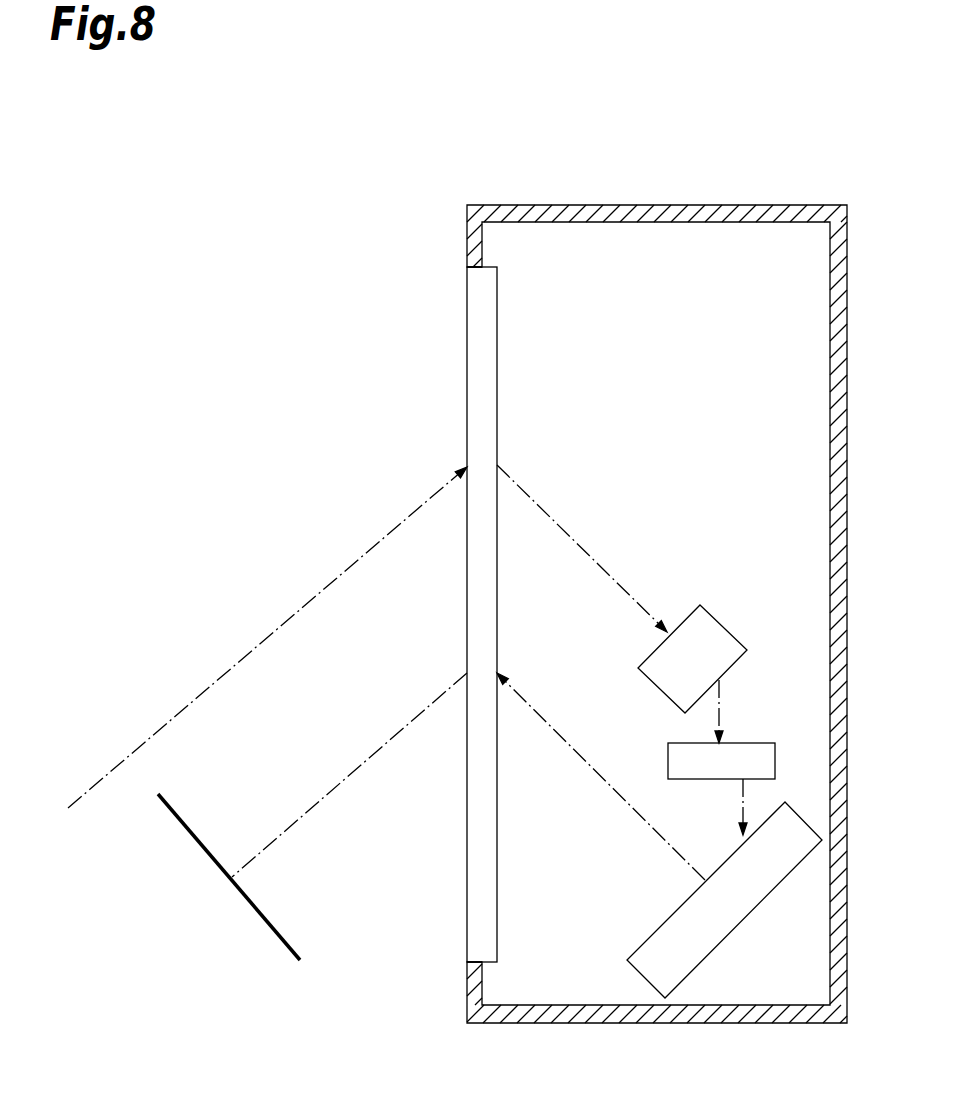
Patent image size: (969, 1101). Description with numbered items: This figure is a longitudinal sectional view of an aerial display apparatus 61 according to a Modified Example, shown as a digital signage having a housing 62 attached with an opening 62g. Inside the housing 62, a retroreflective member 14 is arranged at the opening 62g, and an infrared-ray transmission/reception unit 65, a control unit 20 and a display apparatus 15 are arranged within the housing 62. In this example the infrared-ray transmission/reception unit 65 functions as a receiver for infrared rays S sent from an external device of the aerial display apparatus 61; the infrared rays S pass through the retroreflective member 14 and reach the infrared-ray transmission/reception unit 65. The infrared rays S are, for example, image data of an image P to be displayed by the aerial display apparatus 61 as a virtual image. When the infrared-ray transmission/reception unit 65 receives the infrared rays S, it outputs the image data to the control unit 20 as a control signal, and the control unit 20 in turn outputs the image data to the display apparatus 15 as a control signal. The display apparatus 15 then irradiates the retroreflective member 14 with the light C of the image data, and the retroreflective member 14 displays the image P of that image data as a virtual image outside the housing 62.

The aerial display apparatus 61 is at (457, 541).
The housing 62 is at (623, 205).
The opening 62g is at (476, 268).
The retroreflective member 14 is at (485, 885).
The infrared-ray transmission/reception unit 65 is at (714, 620).
The control unit 20 is at (755, 743).
The display apparatus 15 is at (730, 935).
The infrared rays S is at (352, 560).
The light C is at (612, 790).
The image P is at (270, 933).